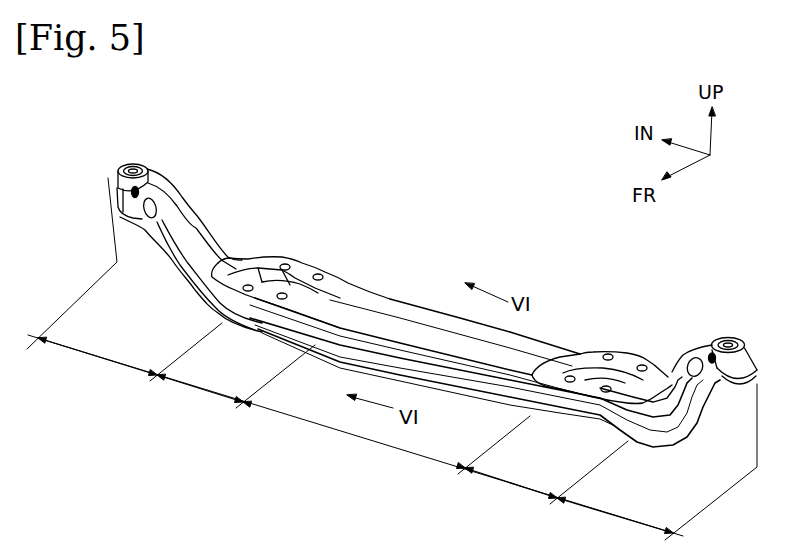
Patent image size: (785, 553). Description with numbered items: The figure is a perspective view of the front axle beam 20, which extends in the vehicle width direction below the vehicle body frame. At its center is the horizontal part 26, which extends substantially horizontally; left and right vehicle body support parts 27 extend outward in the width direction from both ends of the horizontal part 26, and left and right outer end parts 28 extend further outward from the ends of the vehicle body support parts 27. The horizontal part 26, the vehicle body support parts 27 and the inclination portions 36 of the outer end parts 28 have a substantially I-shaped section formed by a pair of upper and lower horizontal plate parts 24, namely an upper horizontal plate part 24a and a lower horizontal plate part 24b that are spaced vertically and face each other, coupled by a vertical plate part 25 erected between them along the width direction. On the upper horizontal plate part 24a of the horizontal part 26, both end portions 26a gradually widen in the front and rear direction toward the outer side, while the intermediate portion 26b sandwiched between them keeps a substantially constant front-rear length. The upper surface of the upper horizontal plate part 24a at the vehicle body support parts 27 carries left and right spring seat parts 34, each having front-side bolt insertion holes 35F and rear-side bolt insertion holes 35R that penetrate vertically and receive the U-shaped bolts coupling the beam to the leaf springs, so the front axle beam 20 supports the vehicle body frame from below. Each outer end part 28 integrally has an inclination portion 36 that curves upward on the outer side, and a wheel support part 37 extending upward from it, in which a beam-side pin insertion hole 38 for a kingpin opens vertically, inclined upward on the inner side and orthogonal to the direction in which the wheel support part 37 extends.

The front axle beam 20 is at (394, 293).
The upper and lower horizontal plate parts 24 is at (548, 345).
The upper horizontal plate part 24a is at (602, 378).
The lower horizontal plate part 24b is at (301, 292).
The vertical plate part 25 is at (360, 350).
The horizontal part 26 is at (485, 382).
The end portions 26a is at (360, 290).
The intermediate portion 26b is at (438, 305).
The vehicle body support parts 27 is at (357, 432).
The outer end parts 28 is at (355, 434).
The spring seat parts 34 is at (303, 268).
The front-side bolt insertion holes 35F is at (280, 300).
The rear-side bolt insertion holes 35R is at (287, 264).
The inclination portion 36 is at (208, 218).
The wheel support part 37 is at (107, 176).
The beam-side pin insertion hole 38 is at (137, 166).